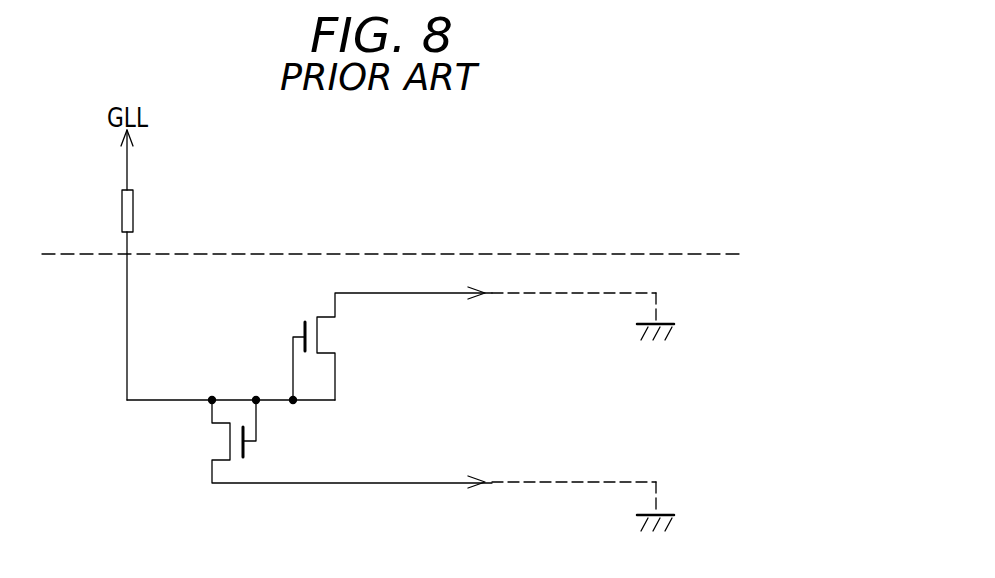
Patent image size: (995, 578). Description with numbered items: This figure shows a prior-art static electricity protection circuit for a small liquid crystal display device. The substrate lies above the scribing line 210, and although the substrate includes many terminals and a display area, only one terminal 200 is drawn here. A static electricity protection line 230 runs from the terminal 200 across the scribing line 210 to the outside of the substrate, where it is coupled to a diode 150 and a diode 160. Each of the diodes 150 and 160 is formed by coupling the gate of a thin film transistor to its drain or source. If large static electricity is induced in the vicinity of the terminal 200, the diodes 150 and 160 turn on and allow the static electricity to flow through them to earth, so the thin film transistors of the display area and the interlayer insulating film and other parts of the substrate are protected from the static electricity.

The diode 150 is at (330, 338).
The diode 160 is at (215, 442).
The terminal 200 is at (134, 208).
The scribing line 210 is at (383, 254).
The static electricity protection line 230 is at (127, 330).